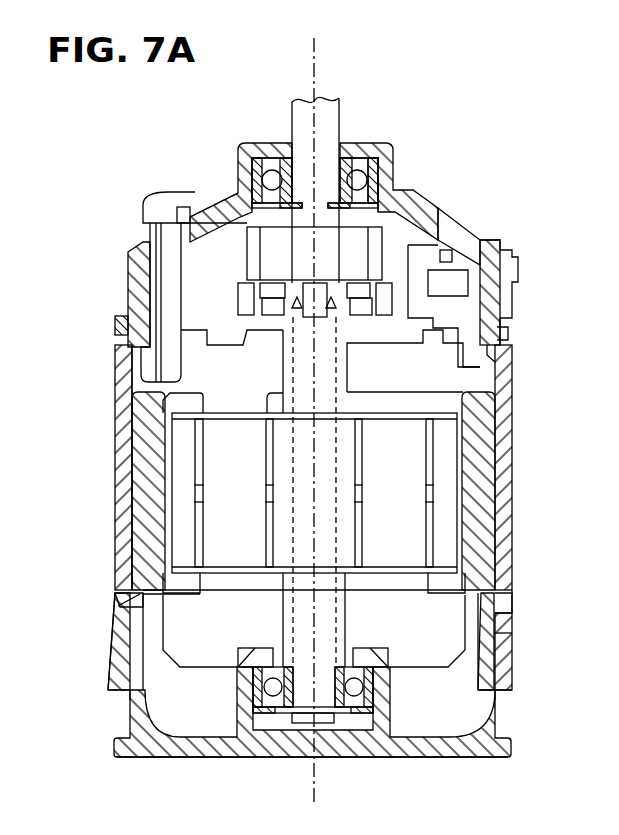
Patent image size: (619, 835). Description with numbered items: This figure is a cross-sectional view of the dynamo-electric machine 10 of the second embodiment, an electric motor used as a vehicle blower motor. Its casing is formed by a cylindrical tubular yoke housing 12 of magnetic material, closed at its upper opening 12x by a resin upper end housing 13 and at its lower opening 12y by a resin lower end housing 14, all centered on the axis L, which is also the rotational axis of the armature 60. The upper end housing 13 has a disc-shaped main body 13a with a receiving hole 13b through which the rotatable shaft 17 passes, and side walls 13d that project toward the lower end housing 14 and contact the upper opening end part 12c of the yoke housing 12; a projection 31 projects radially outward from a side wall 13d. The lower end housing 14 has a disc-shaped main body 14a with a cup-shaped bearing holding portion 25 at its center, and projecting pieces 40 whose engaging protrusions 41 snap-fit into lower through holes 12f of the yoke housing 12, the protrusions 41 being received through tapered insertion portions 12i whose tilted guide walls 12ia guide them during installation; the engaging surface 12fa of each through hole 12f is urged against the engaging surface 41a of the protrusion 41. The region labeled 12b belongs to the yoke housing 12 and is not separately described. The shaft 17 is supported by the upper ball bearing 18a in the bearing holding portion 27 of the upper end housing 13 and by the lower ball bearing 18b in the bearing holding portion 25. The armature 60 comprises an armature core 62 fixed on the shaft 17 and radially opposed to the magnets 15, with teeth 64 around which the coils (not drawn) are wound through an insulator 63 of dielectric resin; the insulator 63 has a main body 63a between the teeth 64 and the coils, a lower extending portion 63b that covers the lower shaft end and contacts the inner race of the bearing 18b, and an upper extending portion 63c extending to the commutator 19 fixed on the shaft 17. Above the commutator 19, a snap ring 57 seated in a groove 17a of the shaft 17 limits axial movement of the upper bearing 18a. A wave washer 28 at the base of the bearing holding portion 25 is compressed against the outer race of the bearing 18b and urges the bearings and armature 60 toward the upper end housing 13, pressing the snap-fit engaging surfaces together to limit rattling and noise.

The dynamo-electric machine 10 is at (319, 421).
The yoke housing 12 is at (115, 347).
The housing inner wall 12b is at (132, 428).
The upper opening end part 12c is at (508, 330).
The upper opening 12x is at (497, 357).
The lower through hole 12f is at (115, 600).
The engaging surface of the through hole 12fa is at (500, 604).
The insertion portion 12i is at (110, 638).
The guide wall 12ia is at (130, 698).
The lower opening 12y is at (120, 677).
The upper end housing 13 is at (138, 246).
The main body of the upper end housing 13a is at (229, 192).
The receiving hole 13b is at (354, 145).
The side wall 13d is at (128, 288).
The lower end housing 14 is at (125, 728).
The main body of the lower end housing 14a is at (185, 758).
The magnet 15 is at (196, 393).
The rotatable shaft 17 is at (291, 110).
The groove 17a is at (283, 209).
The upper ball bearing 18a is at (259, 157).
The lower ball bearing 18b is at (283, 652).
The commutator 19 is at (257, 262).
The bearing holding portion 25 is at (371, 660).
The bearing holding portion 27 is at (378, 169).
The wave washer 28 is at (360, 723).
The projection 31 is at (115, 322).
The projecting piece 40 is at (145, 660).
The engaging protrusion 41 is at (125, 598).
The engaging surface of the engaging protrusion 41a is at (508, 633).
The snap ring 57 is at (356, 209).
The armature 60 is at (458, 470).
The armature core 62 is at (178, 496).
The insulator 63 is at (410, 401).
The insulator main body 63a is at (228, 413).
The lower extending portion 63b is at (343, 602).
The upper extending portion 63c is at (283, 355).
The teeth 64 is at (340, 492).
The axis L is at (320, 72).